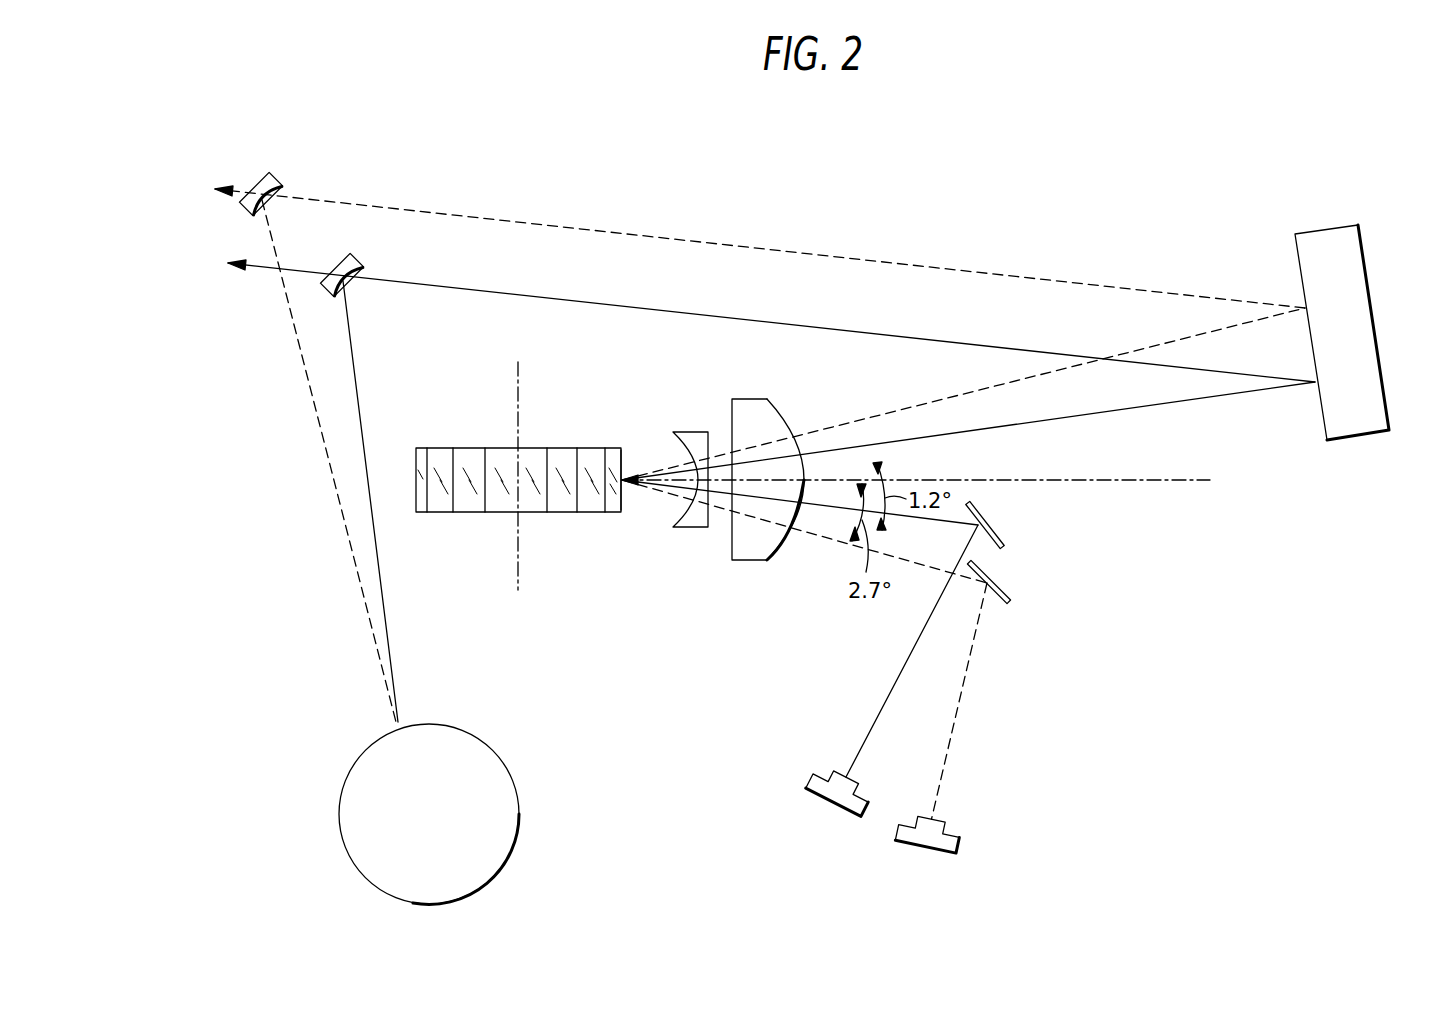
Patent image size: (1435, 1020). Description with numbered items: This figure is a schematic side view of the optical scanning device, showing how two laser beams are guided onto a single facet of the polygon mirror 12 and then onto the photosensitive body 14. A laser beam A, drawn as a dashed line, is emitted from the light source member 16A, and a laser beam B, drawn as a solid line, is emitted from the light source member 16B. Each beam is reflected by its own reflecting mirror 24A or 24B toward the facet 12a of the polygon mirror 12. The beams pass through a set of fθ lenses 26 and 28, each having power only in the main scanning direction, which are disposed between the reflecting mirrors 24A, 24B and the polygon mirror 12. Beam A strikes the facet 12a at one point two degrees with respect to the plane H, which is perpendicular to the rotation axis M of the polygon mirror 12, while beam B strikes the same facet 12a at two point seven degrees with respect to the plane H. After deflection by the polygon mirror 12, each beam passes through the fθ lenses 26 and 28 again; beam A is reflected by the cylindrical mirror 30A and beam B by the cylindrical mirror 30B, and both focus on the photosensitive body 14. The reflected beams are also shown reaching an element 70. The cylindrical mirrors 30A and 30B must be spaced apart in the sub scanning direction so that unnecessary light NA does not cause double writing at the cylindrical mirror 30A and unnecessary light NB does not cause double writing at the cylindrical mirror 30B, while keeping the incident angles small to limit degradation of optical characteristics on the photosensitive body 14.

The polygon mirror 12 is at (542, 447).
The facet 12a is at (630, 447).
The photosensitive body 14 is at (514, 815).
The light source member 16A is at (925, 845).
The light source member 16B is at (835, 799).
The reflecting mirror 24A is at (1009, 590).
The reflecting mirror 24B is at (1003, 532).
The fθ lens 26 is at (695, 530).
The fθ lens 28 is at (750, 563).
The cylindrical mirror 30A is at (283, 180).
The cylindrical mirror 30B is at (364, 260).
The reflecting mirror 70 is at (1370, 275).
The plane H is at (1167, 483).
The rotation axis M is at (522, 380).
The laser beam A is at (955, 722).
The laser beam B is at (888, 693).
The unnecessary light NA is at (233, 186).
The unnecessary light NB is at (259, 273).